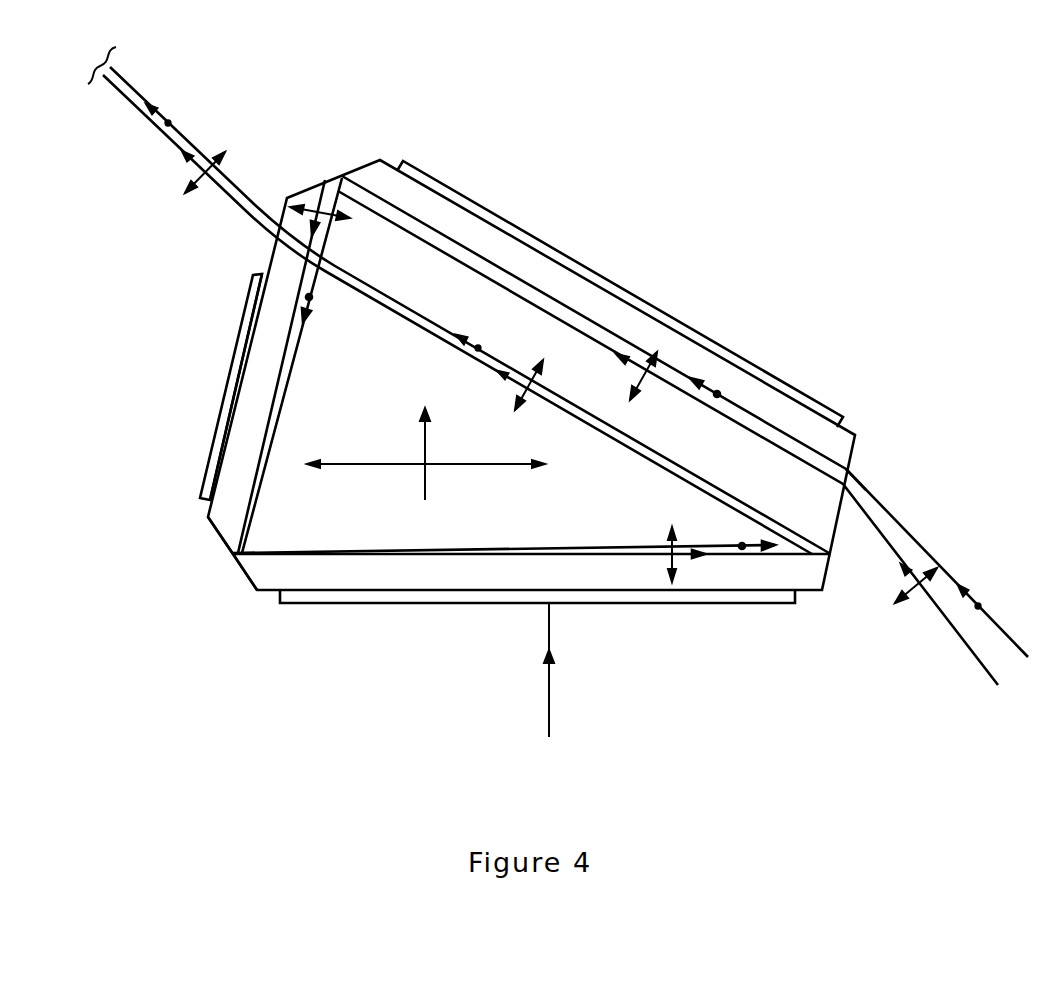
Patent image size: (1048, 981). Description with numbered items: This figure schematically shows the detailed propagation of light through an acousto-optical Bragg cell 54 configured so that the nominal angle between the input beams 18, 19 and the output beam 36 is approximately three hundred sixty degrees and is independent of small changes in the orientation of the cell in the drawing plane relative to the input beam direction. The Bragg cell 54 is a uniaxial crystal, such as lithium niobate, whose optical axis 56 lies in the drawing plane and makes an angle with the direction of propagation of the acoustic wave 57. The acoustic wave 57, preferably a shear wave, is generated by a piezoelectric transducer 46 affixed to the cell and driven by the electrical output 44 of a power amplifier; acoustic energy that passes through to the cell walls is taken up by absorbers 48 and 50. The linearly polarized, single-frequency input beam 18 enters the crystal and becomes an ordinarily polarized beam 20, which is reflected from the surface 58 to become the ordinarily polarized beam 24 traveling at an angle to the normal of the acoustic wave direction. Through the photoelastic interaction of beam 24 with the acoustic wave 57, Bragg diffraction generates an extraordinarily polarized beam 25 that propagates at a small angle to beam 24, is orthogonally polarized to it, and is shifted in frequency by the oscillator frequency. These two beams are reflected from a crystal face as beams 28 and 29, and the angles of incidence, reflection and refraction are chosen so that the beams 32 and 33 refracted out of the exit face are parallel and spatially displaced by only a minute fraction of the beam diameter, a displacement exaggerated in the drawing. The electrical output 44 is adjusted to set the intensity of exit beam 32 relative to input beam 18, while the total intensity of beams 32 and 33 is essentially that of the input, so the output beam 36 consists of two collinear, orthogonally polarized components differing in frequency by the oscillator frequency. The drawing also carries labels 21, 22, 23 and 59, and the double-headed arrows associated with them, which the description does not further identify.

The input beam 18 is at (984, 612).
The input beam 19 is at (918, 592).
The ordinarily polarized beam 20 is at (730, 400).
The light guide adjustment direction 21 is at (638, 365).
The housing 22 is at (275, 262).
The steep light guide 23 is at (310, 222).
The ordinarily polarized beam 24 is at (734, 548).
The extraordinarily polarized beam 25 is at (662, 558).
The reflected beam 28 is at (490, 352).
The reflected beam 29 is at (547, 385).
The exit beam 32 is at (168, 133).
The exit beam 33 is at (213, 182).
The output beam 36 is at (450, 296).
The electrical output 44 is at (552, 690).
The piezoelectric transducer 46 is at (333, 605).
The absorber 48 is at (433, 176).
The absorber 50 is at (212, 455).
The acousto-optical Bragg cell 54 is at (240, 386).
The optical axis 56 is at (353, 462).
The acoustic wave 57 is at (326, 190).
The surface 58 is at (220, 540).
The fiber exit bend 59 is at (853, 470).